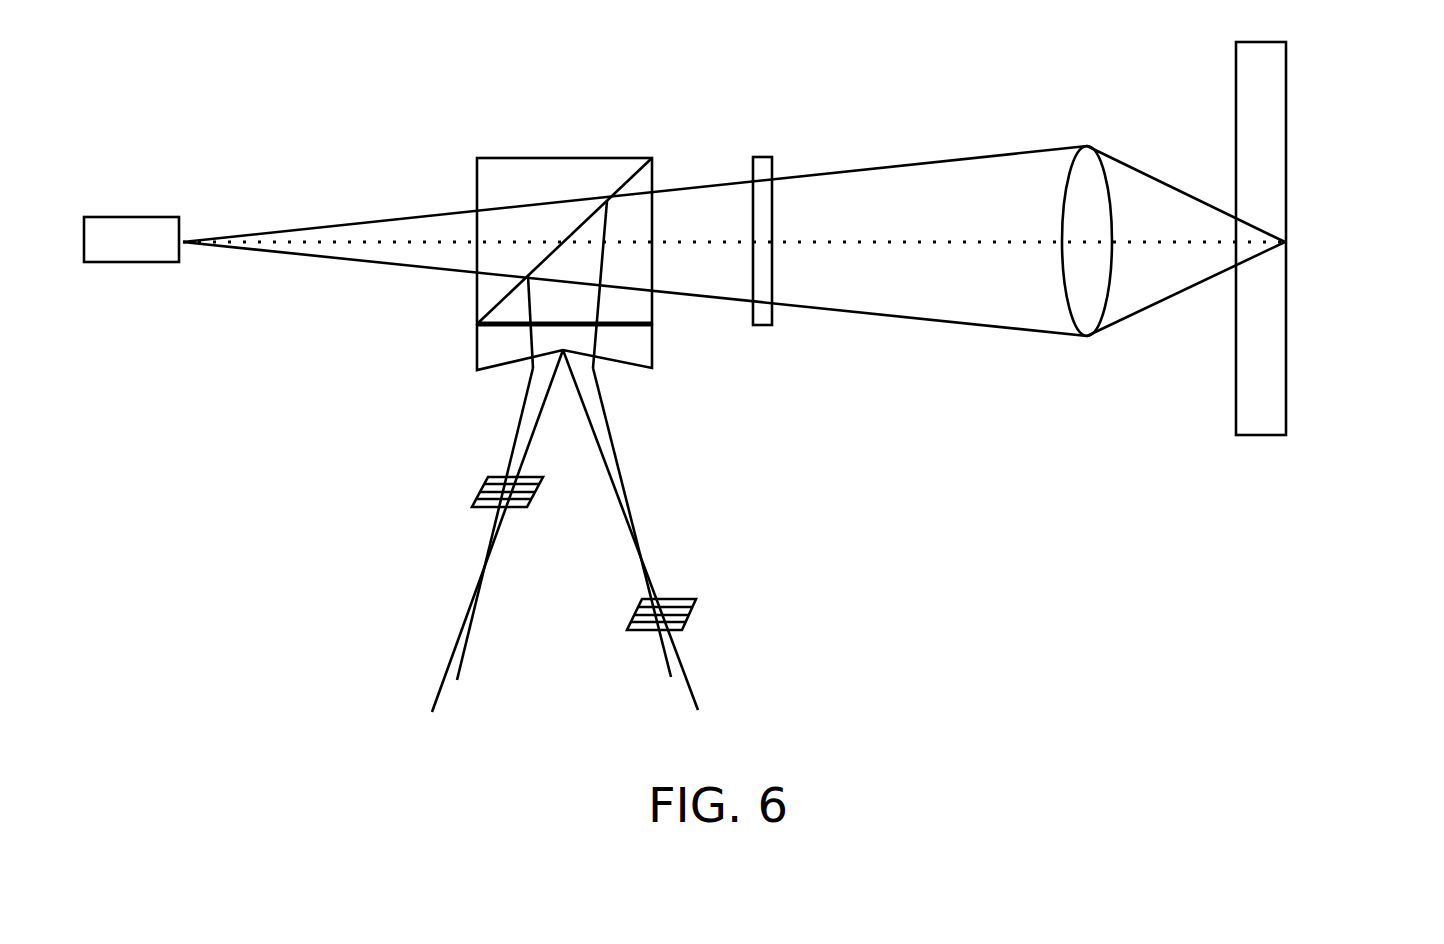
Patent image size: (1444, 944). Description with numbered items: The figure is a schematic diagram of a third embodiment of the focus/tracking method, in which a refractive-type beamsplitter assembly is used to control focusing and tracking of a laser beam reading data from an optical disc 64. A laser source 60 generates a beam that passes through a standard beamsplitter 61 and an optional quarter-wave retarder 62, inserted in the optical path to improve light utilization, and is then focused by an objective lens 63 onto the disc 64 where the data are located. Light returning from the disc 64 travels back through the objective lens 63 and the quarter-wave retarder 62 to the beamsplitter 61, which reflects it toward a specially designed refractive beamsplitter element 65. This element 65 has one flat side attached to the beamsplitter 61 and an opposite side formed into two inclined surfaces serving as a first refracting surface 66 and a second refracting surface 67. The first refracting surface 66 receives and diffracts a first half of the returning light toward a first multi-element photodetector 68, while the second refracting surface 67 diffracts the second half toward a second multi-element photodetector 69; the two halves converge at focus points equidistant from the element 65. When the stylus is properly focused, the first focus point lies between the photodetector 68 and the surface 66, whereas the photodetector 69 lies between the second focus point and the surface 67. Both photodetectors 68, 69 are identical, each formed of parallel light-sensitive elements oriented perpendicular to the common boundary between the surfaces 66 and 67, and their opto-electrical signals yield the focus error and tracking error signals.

The laser source 60 is at (145, 217).
The beamsplitter 61 is at (555, 178).
The quarter-wave retarder 62 is at (762, 168).
The objective lens 63 is at (1107, 172).
The optical disc 64 is at (1286, 83).
The refractive beamsplitter element 65 is at (652, 346).
The first refracting surface 66 is at (640, 370).
The second refracting surface 67 is at (499, 366).
The first multi-element photodetector 68 is at (690, 598).
The second multi-element photodetector 69 is at (488, 477).